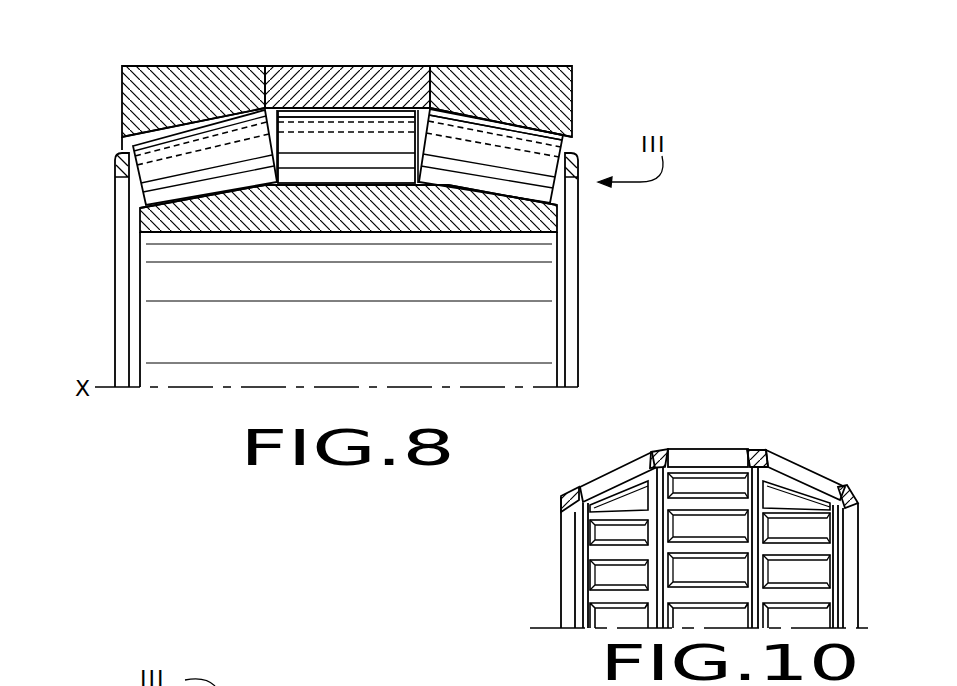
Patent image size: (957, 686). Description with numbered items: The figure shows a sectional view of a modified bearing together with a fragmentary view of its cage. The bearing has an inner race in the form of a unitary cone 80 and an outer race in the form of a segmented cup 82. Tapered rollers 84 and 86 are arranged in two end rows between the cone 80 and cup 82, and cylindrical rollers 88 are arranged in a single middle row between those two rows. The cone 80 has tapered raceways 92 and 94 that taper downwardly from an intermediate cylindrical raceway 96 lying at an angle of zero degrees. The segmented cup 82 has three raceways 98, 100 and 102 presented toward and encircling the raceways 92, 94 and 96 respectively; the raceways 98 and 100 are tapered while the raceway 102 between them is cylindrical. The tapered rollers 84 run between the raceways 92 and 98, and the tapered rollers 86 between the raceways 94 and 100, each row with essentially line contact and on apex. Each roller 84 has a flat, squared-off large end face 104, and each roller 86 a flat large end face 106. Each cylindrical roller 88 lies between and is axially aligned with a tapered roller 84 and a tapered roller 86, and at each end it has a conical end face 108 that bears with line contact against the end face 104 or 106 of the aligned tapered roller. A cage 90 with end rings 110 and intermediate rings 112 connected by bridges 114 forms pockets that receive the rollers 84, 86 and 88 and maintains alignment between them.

In FIG. 8, the cone 80 is at (536, 239).
In FIG. 8, the segmented cup 82 is at (510, 56).
In FIG. 8, the tapered rollers 84 is at (155, 185).
In FIG. 8, the tapered rollers 86 is at (535, 173).
In FIG. 8, the cylindrical rollers 88 is at (329, 136).
In FIG. 8, the cage 90 is at (104, 170).
In FIG. 10, the cage 90 is at (691, 501).
In FIG. 8, the tapered raceway 92 is at (216, 200).
In FIG. 8, the tapered raceway 94 is at (507, 194).
In FIG. 8, the intermediate cylindrical raceway 96 is at (366, 183).
In FIG. 8, the raceway 98 is at (118, 141).
In FIG. 8, the raceway 100 is at (537, 132).
In FIG. 8, the raceway 102 is at (352, 110).
In FIG. 8, the large end face 104 is at (285, 100).
In FIG. 8, the large end face 106 is at (417, 103).
In FIG. 8, the conical end face 108 is at (276, 178).
In FIG. 10, the end rings 110 is at (558, 495).
In FIG. 10, the intermediate rings 112 is at (653, 448).
In FIG. 10, the bridges 114 is at (613, 470).